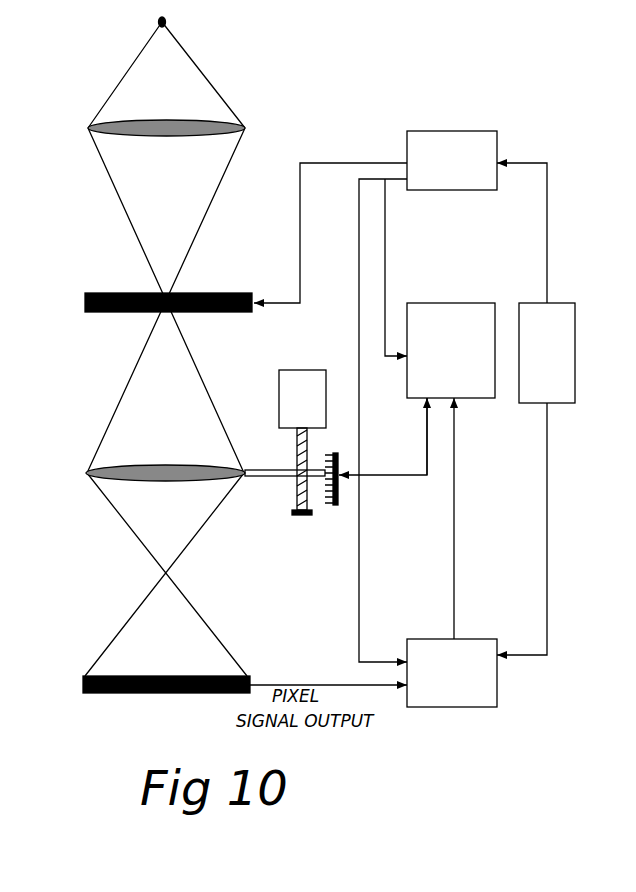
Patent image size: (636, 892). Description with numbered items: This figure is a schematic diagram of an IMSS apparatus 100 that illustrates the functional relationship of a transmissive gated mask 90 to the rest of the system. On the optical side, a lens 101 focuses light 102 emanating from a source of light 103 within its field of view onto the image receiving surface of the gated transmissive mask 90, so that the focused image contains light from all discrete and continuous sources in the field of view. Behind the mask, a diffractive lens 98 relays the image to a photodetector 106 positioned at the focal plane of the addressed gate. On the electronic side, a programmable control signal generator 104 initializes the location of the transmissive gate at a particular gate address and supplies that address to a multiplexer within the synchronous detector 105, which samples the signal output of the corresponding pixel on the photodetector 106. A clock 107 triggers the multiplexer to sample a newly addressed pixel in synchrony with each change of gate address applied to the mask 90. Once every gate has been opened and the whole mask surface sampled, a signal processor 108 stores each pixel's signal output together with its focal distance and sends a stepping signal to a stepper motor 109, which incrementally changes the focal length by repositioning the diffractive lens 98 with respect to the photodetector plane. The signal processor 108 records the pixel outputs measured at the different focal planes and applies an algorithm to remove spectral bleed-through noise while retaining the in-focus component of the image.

The IMSS apparatus 100 is at (558, 112).
The lens 101 is at (120, 124).
The light 102 is at (148, 70).
The source of light 103 is at (157, 19).
The transmissive gated mask 90 is at (128, 296).
The diffractive lens 98 is at (118, 470).
The photodetector 106 is at (128, 672).
The programmable control signal generator 104 is at (452, 160).
The synchronous detector 105 is at (452, 673).
The clock 107 is at (547, 353).
The signal processor 108 is at (451, 350).
The stepper motor 109 is at (308, 442).